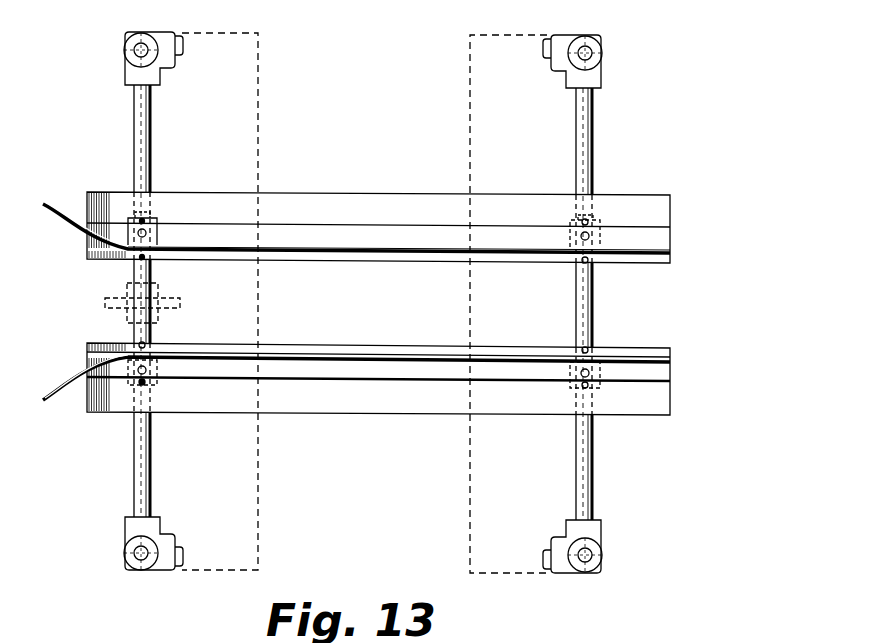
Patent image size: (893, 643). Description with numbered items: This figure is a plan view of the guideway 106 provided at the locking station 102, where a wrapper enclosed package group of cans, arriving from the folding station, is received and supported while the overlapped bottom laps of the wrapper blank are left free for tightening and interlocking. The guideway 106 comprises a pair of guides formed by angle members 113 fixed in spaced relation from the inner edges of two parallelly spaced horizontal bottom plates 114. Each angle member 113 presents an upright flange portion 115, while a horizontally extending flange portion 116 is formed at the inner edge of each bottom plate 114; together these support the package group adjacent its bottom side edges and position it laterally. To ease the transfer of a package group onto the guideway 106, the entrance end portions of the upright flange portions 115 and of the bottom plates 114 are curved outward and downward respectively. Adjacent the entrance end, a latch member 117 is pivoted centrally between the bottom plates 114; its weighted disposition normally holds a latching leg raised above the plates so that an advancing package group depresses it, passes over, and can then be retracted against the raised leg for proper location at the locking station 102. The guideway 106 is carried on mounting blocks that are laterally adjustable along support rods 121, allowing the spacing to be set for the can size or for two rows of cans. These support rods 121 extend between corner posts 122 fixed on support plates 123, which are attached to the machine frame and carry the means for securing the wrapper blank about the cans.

The locking station 102 is at (342, 415).
The guideway 106 is at (87, 190).
The angle members 113 is at (655, 243).
The bottom plates 114 is at (370, 195).
The upright flange portion 115 is at (428, 356).
The horizontally extending flange portion 116 is at (350, 258).
The latch member 117 is at (105, 304).
The support rods 121 is at (132, 482).
The corner posts 122 is at (596, 77).
The support plates 123 is at (207, 560).